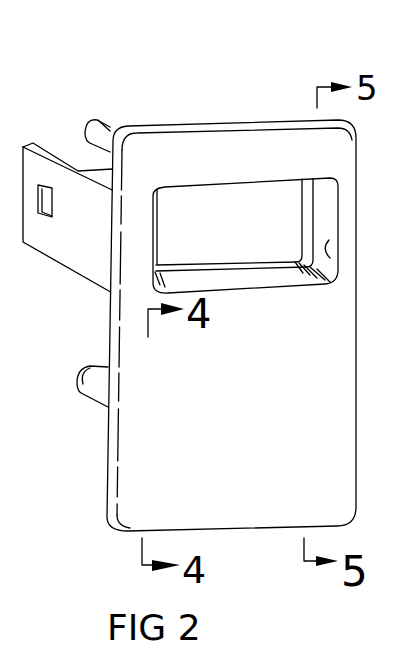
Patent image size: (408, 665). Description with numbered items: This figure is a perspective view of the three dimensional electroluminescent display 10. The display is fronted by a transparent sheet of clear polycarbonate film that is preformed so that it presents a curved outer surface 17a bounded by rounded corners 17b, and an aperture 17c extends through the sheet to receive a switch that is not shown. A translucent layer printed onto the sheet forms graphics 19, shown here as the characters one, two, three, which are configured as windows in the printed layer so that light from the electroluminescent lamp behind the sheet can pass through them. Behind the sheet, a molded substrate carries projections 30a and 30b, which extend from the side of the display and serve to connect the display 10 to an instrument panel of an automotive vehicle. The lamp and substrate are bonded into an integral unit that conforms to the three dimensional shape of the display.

The three dimensional electroluminescent display 10 is at (286, 106).
The curved outer surface 17a is at (267, 378).
The rounded corners 17b is at (110, 514).
The aperture 17c is at (328, 260).
The graphics 19 is at (216, 461).
The projection 30a is at (77, 266).
The projection 30b is at (97, 122).